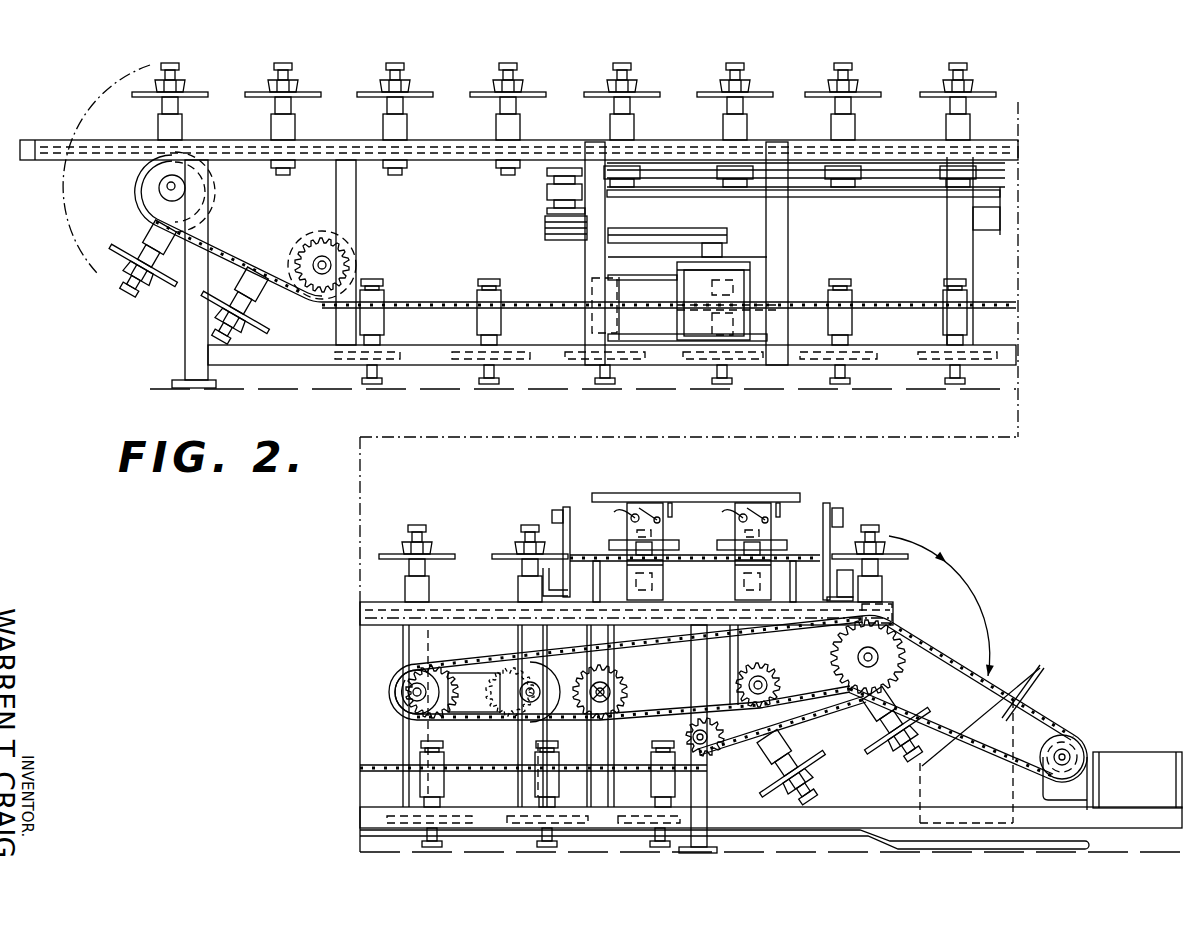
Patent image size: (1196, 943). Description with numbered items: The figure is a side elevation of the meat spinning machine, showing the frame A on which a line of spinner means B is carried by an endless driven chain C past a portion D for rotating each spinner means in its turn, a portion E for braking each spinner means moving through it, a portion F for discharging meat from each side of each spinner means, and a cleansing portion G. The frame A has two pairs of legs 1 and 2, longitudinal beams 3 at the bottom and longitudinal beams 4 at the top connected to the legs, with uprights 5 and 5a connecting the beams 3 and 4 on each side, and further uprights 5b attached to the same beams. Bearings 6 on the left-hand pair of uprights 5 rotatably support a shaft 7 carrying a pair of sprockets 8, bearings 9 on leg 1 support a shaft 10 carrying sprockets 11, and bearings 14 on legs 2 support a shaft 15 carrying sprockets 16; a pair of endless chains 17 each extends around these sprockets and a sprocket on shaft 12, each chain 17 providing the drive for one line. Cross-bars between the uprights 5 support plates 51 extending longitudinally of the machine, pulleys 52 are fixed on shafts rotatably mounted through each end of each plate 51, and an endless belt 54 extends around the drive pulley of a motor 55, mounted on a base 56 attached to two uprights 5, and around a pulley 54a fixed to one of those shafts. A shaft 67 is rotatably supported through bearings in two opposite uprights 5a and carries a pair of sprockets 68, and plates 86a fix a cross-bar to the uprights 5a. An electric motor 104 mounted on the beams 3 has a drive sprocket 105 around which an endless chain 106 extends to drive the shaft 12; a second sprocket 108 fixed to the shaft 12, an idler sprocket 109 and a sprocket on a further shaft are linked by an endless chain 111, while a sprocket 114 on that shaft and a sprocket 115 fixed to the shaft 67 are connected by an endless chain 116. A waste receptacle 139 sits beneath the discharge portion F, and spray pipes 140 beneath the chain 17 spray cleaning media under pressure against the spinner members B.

The legs 1 is at (190, 353).
The legs 2 is at (705, 853).
The longitudinal beams 3 is at (500, 50).
The longitudinal beams 4 is at (456, 160).
The uprights 5 is at (354, 218).
The uprights 5a is at (427, 737).
The uprights 5b is at (593, 793).
The bearings 6 is at (331, 262).
The shaft 7 is at (333, 268).
The sprockets 8 is at (320, 238).
The bearings 9 is at (186, 183).
The shaft 10 is at (165, 188).
The sprockets 11 is at (147, 178).
The shaft 12 is at (906, 632).
The bearings 14 is at (623, 472).
The shaft 15 is at (710, 758).
The sprockets 16 is at (722, 750).
The endless chains 17 is at (406, 301).
The plates 51 is at (863, 192).
The pulleys 52 is at (565, 168).
The endless belts 54 is at (637, 232).
The pulley 54a is at (547, 228).
The motor 55 is at (752, 278).
The base 56 is at (631, 274).
The shaft 67 is at (390, 672).
The sprockets 68 is at (497, 690).
The plates 86a is at (408, 723).
The electric motor 104 is at (1137, 780).
The drive sprocket 105 is at (1070, 739).
The endless chain 106 is at (1035, 712).
The second sprocket 108 is at (898, 677).
The idler sprocket 109 is at (790, 700).
The endless chain 111 is at (746, 685).
The sprocket 114 is at (614, 693).
The sprocket 115 is at (395, 688).
The endless chain 116 is at (392, 705).
The waste receptacle 139 is at (920, 787).
The spray pipes 140 is at (962, 852).
The frame A is at (187, 323).
The spinner means B is at (258, 93).
The endless driven chain C is at (232, 237).
The rotating portion D is at (655, 182).
The braking portion E is at (442, 662).
The discharging portion F is at (703, 494).
The cleansing portion G is at (608, 842).